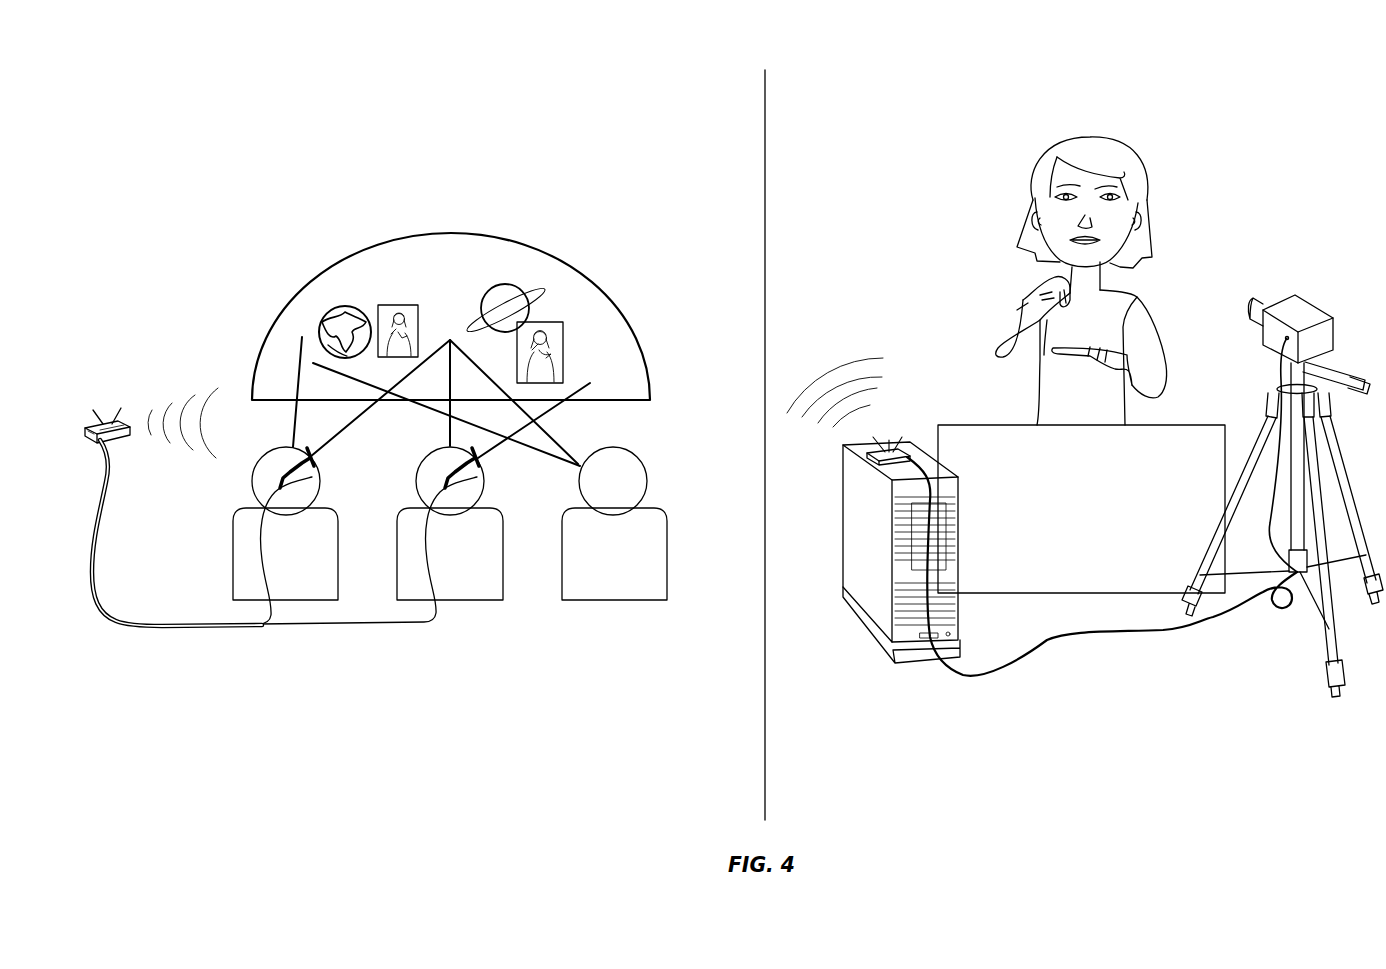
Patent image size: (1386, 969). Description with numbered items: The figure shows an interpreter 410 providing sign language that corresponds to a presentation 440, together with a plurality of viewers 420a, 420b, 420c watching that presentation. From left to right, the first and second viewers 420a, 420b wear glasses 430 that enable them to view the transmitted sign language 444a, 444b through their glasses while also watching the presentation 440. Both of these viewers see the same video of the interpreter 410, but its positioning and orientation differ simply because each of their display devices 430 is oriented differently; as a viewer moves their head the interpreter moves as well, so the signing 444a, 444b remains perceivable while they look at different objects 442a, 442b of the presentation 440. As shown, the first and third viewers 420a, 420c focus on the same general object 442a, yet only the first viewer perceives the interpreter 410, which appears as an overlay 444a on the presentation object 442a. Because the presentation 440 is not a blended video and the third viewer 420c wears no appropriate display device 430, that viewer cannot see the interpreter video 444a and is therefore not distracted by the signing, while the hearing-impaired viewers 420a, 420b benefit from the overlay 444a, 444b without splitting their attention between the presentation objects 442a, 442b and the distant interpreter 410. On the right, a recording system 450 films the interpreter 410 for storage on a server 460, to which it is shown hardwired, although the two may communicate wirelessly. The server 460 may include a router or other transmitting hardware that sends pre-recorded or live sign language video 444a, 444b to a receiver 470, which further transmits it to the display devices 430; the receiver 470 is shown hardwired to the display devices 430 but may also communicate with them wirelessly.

The interpreter 410 is at (1125, 150).
The first viewer 420a is at (240, 572).
The second viewer 420b is at (466, 590).
The third viewer 420c is at (629, 590).
The glasses 430 is at (443, 468).
The presentation 440 is at (443, 250).
The presentation object 442a is at (332, 318).
The presentation object 442b is at (509, 284).
The sign language video overlay 444a is at (397, 305).
The sign language video overlay 444b is at (563, 343).
The recording system 450 is at (1303, 307).
The server 460 is at (890, 450).
The receiver 470 is at (110, 421).